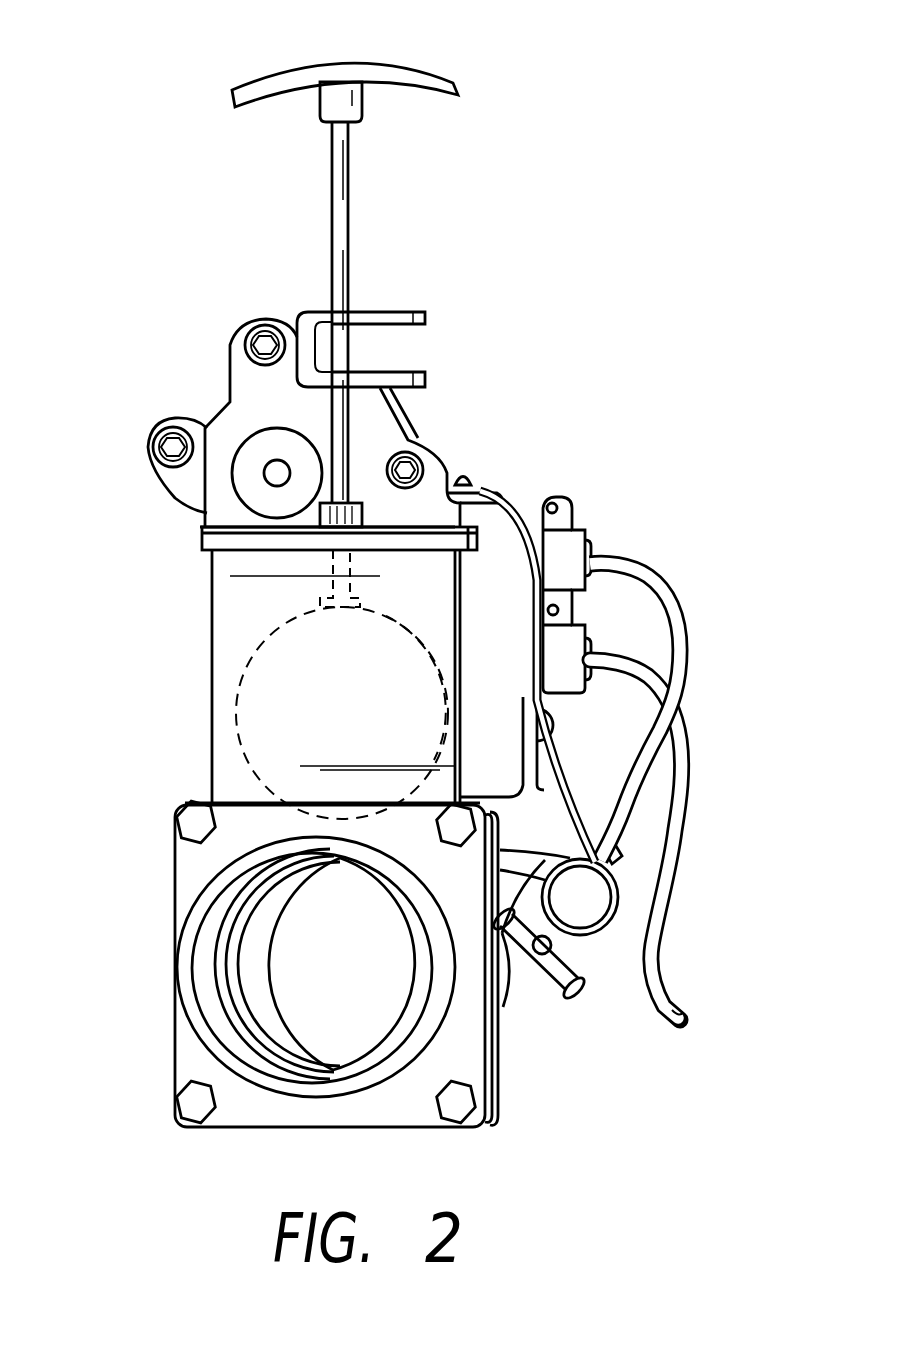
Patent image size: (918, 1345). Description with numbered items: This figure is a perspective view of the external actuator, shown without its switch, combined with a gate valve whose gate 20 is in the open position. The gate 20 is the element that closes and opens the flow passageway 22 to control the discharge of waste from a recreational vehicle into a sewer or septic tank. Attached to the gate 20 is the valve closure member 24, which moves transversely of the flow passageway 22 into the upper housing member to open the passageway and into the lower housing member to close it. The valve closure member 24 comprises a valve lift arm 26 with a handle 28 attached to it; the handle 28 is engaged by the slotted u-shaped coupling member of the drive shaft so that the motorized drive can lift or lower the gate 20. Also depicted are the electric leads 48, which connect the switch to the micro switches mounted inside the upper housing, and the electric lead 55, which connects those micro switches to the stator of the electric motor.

The gate 20 is at (360, 728).
The flow passageway 22 is at (358, 978).
The valve closure member 24 is at (330, 572).
The valve lift arm 26 is at (330, 220).
The handle 28 is at (458, 94).
The electric leads 48 is at (668, 973).
The electric lead 55 is at (678, 758).